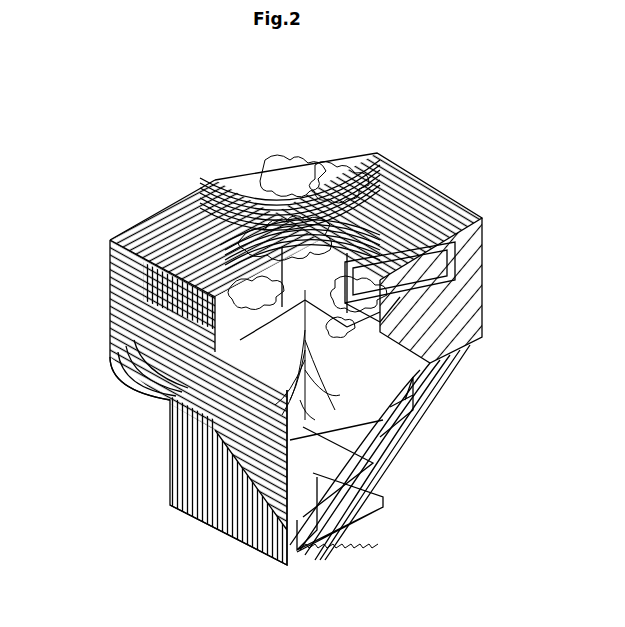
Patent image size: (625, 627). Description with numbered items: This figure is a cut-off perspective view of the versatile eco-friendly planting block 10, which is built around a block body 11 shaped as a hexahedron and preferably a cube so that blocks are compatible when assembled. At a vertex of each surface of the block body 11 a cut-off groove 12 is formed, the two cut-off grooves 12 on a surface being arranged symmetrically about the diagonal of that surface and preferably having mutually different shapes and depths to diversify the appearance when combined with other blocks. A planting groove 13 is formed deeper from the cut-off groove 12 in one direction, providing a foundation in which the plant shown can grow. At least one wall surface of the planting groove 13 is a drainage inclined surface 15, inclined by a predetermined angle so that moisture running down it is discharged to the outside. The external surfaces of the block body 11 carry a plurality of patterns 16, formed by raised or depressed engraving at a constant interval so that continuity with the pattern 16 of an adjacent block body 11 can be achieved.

The versatile eco-friendly planting block 10 is at (152, 122).
The block body 11 is at (436, 184).
The cut-off groove 12 is at (160, 368).
The planting groove 13 is at (195, 440).
The drainage inclined surface 15 is at (330, 455).
The pattern 16 is at (110, 296).